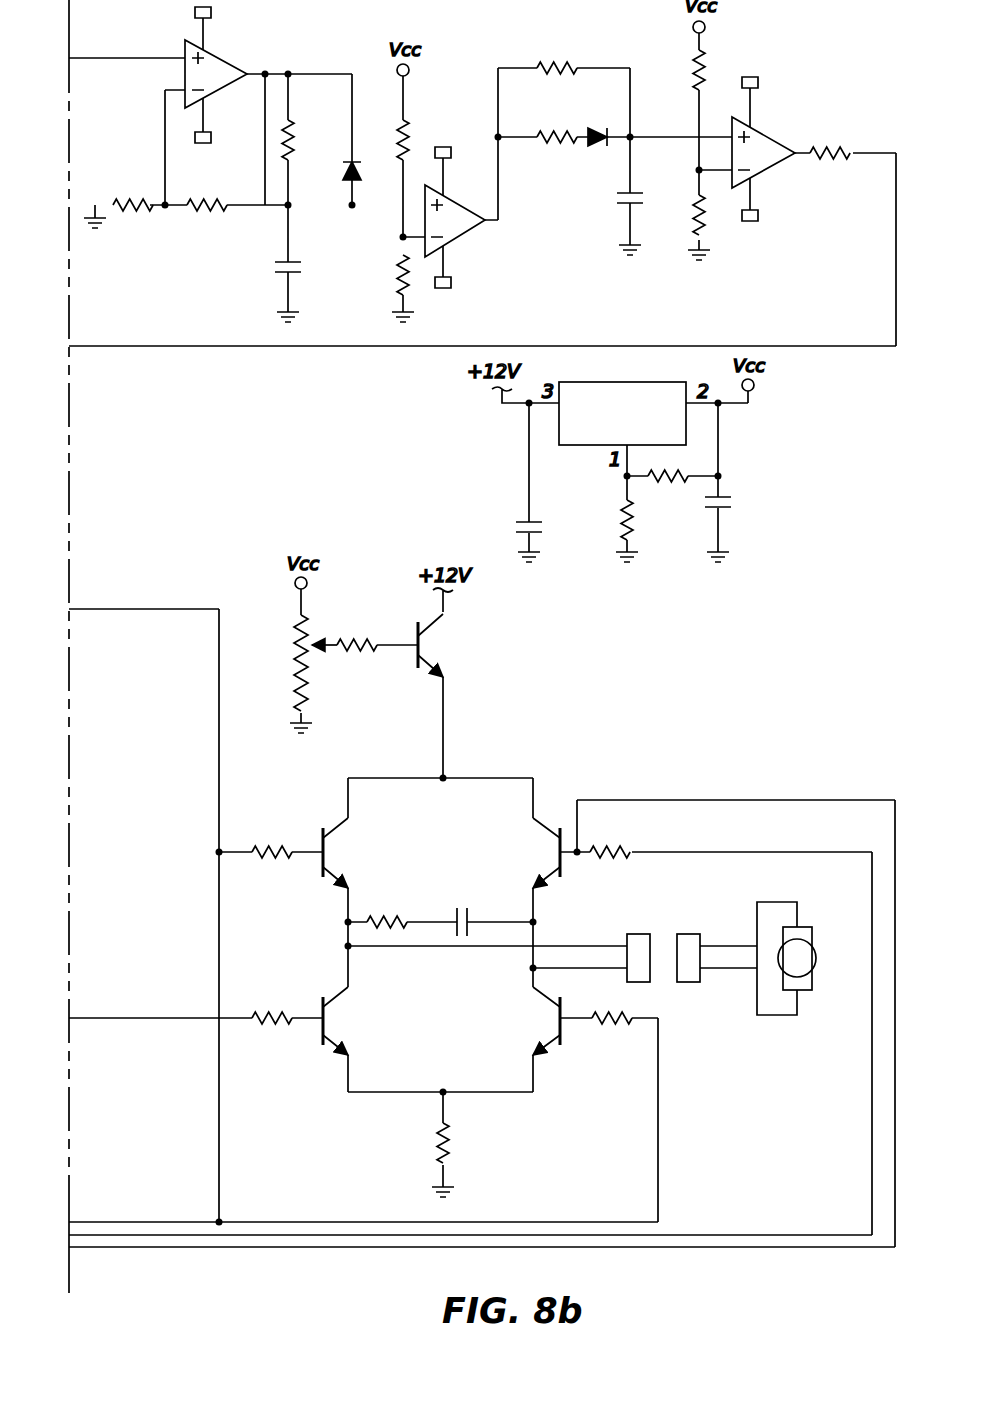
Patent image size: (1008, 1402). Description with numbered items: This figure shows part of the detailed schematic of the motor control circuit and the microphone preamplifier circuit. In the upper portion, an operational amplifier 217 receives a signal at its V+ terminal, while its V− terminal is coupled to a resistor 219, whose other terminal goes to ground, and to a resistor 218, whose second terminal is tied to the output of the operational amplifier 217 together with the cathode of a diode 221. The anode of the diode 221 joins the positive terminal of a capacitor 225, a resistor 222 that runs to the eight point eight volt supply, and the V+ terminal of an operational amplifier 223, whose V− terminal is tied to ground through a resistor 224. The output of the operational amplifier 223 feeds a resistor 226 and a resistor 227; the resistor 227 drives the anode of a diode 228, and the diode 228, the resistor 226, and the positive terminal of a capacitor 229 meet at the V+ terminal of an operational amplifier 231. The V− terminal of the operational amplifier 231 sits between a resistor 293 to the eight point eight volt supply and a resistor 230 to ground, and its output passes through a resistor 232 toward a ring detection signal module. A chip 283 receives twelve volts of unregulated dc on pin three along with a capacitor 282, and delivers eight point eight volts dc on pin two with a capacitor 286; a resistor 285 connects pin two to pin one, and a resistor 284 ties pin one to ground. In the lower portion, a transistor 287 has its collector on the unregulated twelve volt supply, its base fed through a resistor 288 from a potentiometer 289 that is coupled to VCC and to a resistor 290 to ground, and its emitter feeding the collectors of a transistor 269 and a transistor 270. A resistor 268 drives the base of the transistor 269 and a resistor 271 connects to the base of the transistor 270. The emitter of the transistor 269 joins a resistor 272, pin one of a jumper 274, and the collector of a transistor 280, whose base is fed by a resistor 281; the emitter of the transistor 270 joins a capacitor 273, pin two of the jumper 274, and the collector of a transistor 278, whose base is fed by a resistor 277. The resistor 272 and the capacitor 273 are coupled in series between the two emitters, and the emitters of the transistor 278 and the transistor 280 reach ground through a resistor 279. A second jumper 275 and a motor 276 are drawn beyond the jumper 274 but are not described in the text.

The operational amplifier 217 is at (218, 52).
The resistor 218 is at (211, 214).
The resistor 219 is at (137, 214).
The diode 221 is at (352, 157).
The resistor 222 is at (430, 124).
The operational amplifier 223 is at (465, 238).
The resistor 224 is at (401, 264).
The capacitor 225 is at (310, 252).
The resistor 226 is at (312, 122).
The resistor 227 is at (541, 132).
The diode 228 is at (590, 146).
The capacitor 229 is at (630, 192).
The resistor 230 is at (694, 206).
The operational amplifier 231 is at (767, 129).
The resistor 232 is at (824, 148).
The resistor 293 is at (694, 64).
The resistor 268 is at (268, 846).
The transistor 269 is at (317, 862).
The transistor 270 is at (566, 864).
The resistor 271 is at (620, 846).
The resistor 272 is at (381, 914).
The capacitor 273 is at (472, 916).
The jumper 274 is at (642, 932).
The connector 275 is at (693, 932).
The motor 276 is at (810, 968).
The resistor 277 is at (620, 1014).
The transistor 278 is at (563, 1042).
The resistor 279 is at (446, 1140).
The transistor 280 is at (317, 1029).
The resistor 281 is at (265, 1014).
The capacitor 282 is at (552, 512).
The chip 283 is at (630, 382).
The resistor 284 is at (623, 510).
The resistor 285 is at (666, 478).
The capacitor 286 is at (722, 498).
The transistor 287 is at (414, 654).
The resistor 288 is at (348, 638).
The potentiometer 289 is at (298, 619).
The resistor 290 is at (298, 676).